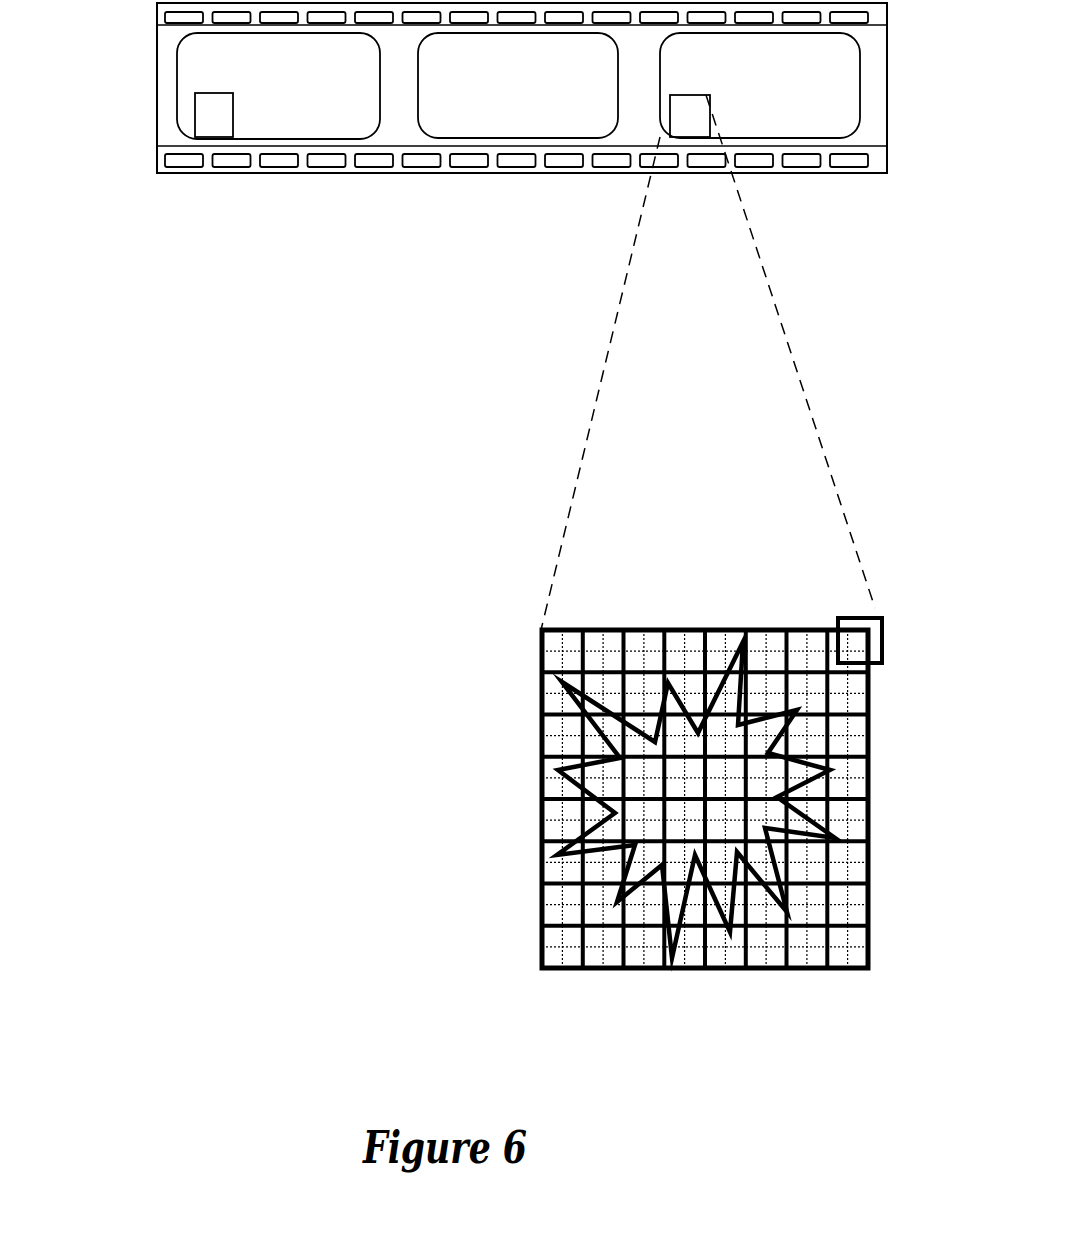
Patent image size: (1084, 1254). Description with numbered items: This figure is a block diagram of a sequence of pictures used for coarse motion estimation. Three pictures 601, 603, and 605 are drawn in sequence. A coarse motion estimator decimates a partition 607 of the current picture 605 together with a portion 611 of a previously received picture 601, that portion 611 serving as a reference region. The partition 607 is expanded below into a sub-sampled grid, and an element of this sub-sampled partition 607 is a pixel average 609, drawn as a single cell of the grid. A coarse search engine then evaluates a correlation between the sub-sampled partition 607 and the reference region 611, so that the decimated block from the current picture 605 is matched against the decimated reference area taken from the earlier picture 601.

The previously received picture 601 is at (278, 86).
The picture 603 is at (518, 85).
The current picture 605 is at (760, 85).
The partition 607 is at (683, 125).
The pixel average 609 is at (883, 640).
The reference region 611 is at (215, 117).